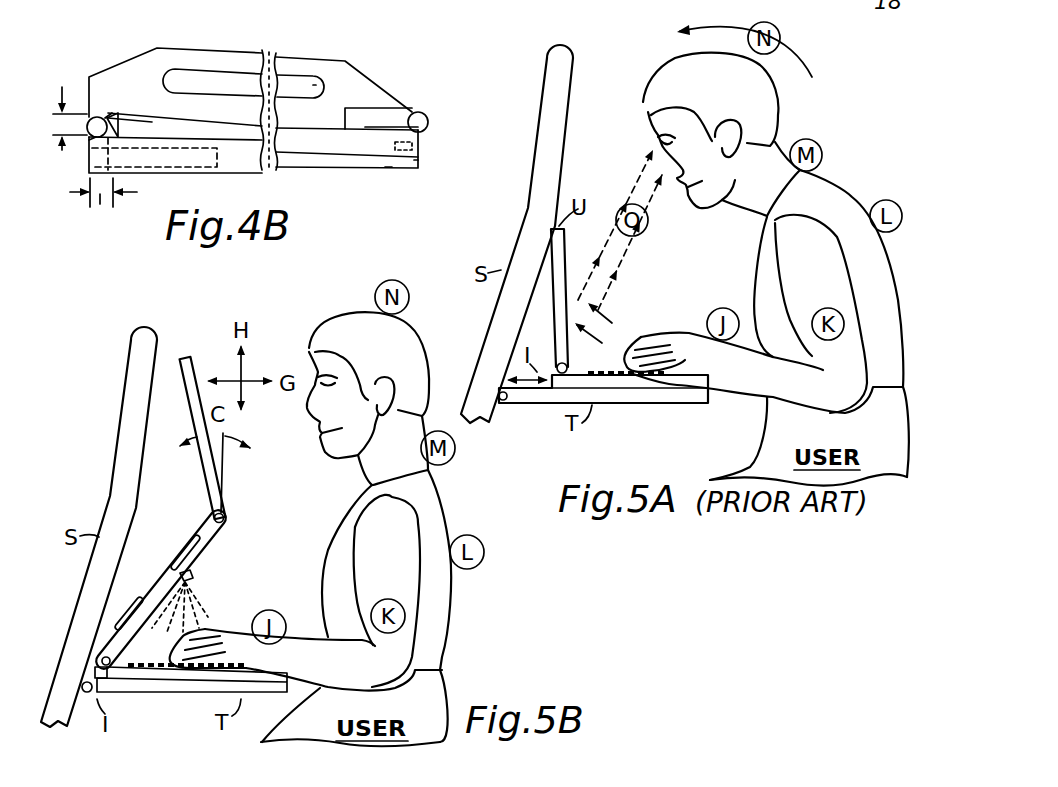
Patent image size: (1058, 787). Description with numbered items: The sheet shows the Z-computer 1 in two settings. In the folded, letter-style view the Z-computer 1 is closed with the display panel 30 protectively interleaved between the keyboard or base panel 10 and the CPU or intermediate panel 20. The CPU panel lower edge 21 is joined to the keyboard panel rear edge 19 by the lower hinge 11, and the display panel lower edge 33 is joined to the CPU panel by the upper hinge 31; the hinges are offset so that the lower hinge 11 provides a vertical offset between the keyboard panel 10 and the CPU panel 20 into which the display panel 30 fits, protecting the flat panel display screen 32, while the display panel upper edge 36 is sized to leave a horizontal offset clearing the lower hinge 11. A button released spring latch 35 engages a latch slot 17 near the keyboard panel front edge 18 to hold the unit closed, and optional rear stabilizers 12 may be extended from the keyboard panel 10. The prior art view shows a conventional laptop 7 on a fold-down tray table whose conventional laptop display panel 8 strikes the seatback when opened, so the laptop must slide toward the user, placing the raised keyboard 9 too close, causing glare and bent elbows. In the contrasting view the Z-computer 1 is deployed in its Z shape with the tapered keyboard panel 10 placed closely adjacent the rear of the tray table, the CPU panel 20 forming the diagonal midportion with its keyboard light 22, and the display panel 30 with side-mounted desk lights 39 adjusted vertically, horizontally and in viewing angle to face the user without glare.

In FIG. 4B, the Z-computer 1 is at (254, 125).
In FIG. 5B, the Z-computer 1 is at (184, 542).
In FIG. 5A, the conventional laptop 7 is at (620, 287).
In FIG. 5A, the conventional laptop display panel 8 is at (551, 292).
In FIG. 5A, the keyboard 9 is at (677, 378).
In FIG. 4B, the keyboard or base panel 10 is at (273, 168).
In FIG. 5B, the keyboard or base panel 10 is at (159, 685).
In FIG. 4B, the lower hinge 11 is at (104, 117).
In FIG. 4B, the rear stabilizer 12 is at (103, 160).
In FIG. 4B, the latch slot 17 is at (395, 153).
In FIG. 4B, the keyboard panel front edge 18 is at (414, 160).
In FIG. 4B, the keyboard panel rear edge 19 is at (86, 143).
In FIG. 4B, the CPU or intermediate panel 20 is at (276, 52).
In FIG. 5B, the CPU or intermediate panel 20 is at (165, 570).
In FIG. 4B, the CPU panel lower edge 21 is at (90, 118).
In FIG. 5B, the light 22 is at (195, 571).
In FIG. 4B, the display panel 30 is at (340, 143).
In FIG. 5B, the display panel 30 is at (203, 464).
In FIG. 4B, the upper hinge 31 is at (425, 114).
In FIG. 4B, the flat panel display screen 32 is at (317, 127).
In FIG. 4B, the display panel lower edge 33 is at (428, 136).
In FIG. 4B, the button released spring latch 35 is at (417, 150).
In FIG. 4B, the display panel upper edge 36 is at (119, 120).
In FIG. 5B, the side-mounted desk lights 39 is at (215, 514).